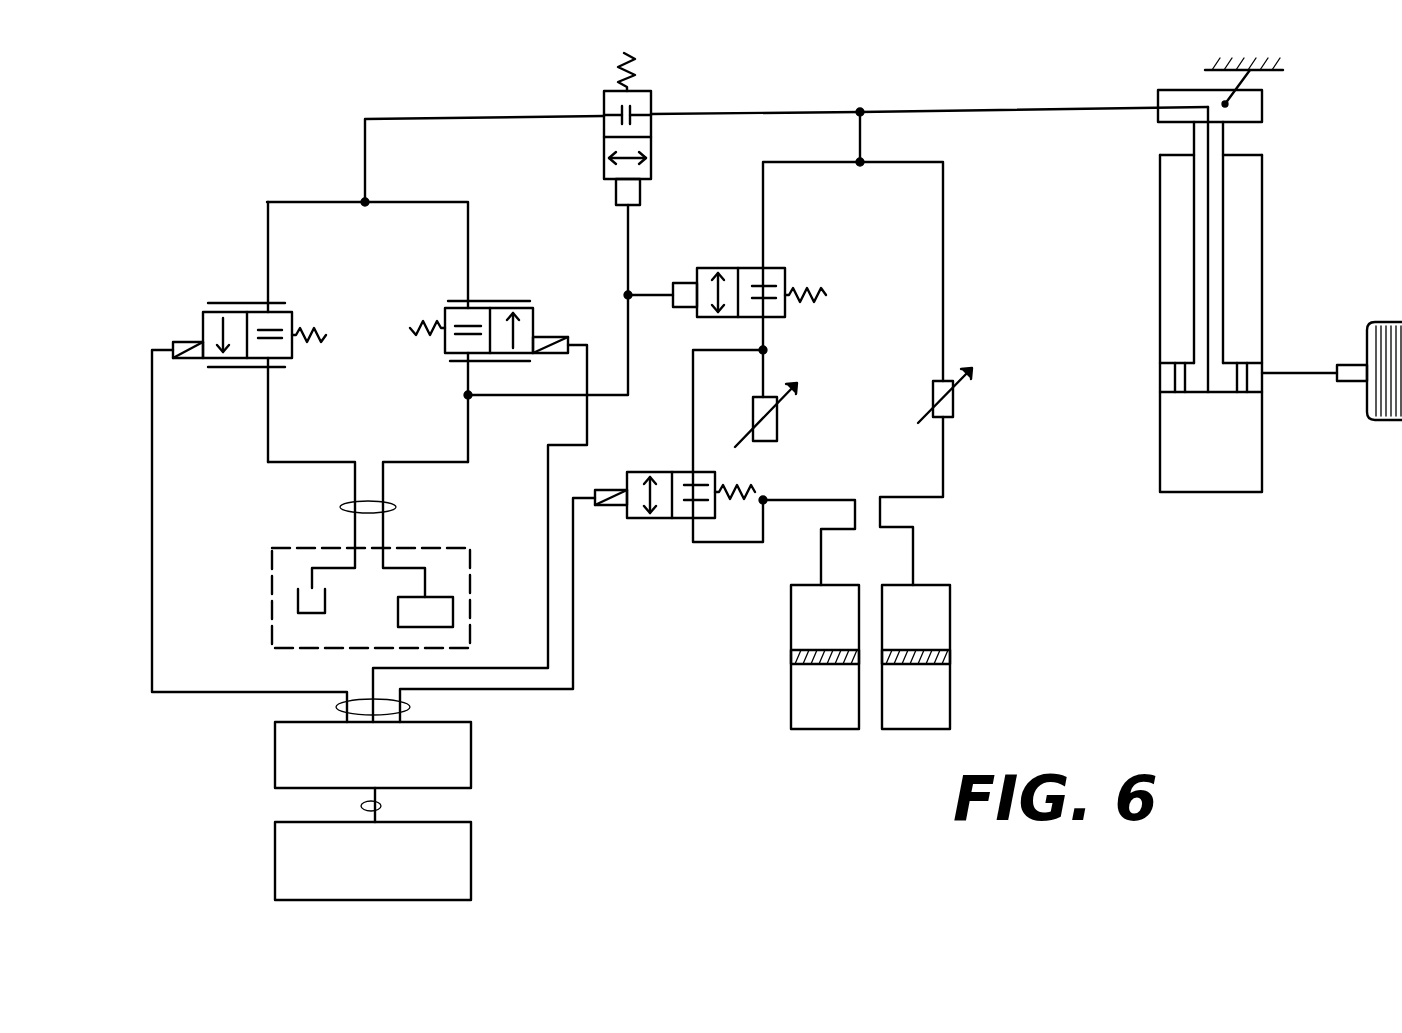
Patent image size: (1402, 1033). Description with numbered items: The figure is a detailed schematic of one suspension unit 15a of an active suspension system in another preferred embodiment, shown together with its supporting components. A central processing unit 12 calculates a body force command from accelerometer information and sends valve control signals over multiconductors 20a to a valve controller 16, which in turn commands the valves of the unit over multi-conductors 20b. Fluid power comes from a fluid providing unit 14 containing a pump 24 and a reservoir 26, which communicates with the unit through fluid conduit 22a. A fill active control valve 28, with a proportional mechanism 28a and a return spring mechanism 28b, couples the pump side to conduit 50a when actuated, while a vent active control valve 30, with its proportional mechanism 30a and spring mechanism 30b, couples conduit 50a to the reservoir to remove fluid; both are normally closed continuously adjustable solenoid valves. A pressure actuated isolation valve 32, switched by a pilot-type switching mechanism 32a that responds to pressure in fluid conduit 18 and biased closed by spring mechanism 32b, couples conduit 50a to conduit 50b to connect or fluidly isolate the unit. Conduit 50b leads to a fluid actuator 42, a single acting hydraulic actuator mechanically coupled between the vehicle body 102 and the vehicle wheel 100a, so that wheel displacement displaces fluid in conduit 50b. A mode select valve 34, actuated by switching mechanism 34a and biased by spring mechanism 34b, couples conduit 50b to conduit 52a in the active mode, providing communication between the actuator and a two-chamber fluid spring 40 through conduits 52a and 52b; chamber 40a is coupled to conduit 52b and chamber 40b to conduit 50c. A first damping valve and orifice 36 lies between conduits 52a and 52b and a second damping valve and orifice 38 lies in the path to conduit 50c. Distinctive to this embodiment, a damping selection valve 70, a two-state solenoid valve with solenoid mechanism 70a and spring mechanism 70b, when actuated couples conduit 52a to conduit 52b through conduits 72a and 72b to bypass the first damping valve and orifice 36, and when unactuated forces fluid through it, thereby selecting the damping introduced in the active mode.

The central processing unit 12 is at (471, 856).
The fluid providing unit 14 is at (472, 620).
The suspension unit 15a is at (984, 78).
The valve controller 16 is at (471, 758).
The fluid conduit 18 is at (628, 395).
The multiconductors 20a is at (381, 806).
The multi-conductors 20b is at (410, 707).
The fluid conduit 22a is at (396, 507).
The pump 24 is at (425, 612).
The reservoir 26 is at (327, 608).
The fill active control valve 28 is at (550, 313).
The proportional mechanism 28a is at (568, 342).
The spring mechanism 28b is at (418, 333).
The vent active control valve 30 is at (193, 325).
The proportional mechanism 30a is at (190, 362).
The spring mechanism 30b is at (322, 332).
The isolation valve 32 is at (660, 173).
The pressure actuated switching mechanism 32a is at (613, 190).
The spring mechanism 32b is at (637, 63).
The mode select valve 34 is at (708, 264).
The switching mechanism 34a is at (680, 280).
The spring mechanism 34b is at (826, 295).
The first damping valve and orifice 36 is at (787, 423).
The second damping valve and orifice 38 is at (931, 403).
The fluid spring 40 is at (880, 644).
The chamber 40a is at (791, 628).
The chamber 40b is at (950, 683).
The fluid actuator 42 is at (1135, 472).
The fluid conduit 50a is at (455, 118).
The fluid conduit 50b is at (708, 110).
The fluid conduit 50c is at (945, 473).
The fluid conduit 52a is at (765, 348).
The fluid conduit 52b is at (800, 499).
The damping selection valve 70 is at (670, 522).
The solenoid mechanism 70a is at (612, 507).
The spring mechanism 70b is at (751, 490).
The fluid conduit 72a is at (693, 355).
The fluid conduit 72b is at (750, 548).
The vehicle wheel 100a is at (1372, 323).
The vehicle body 102 is at (1288, 64).